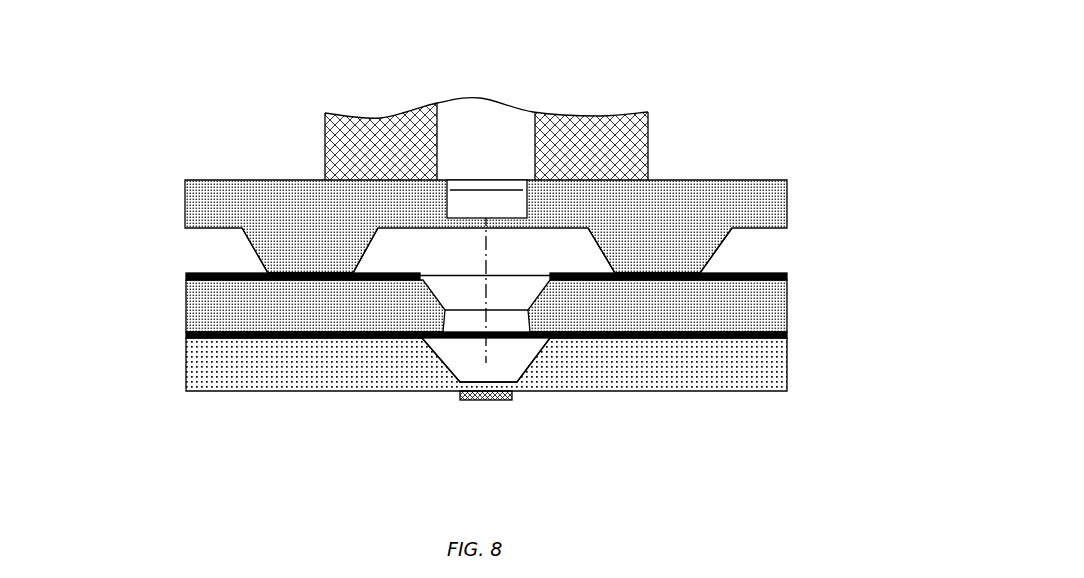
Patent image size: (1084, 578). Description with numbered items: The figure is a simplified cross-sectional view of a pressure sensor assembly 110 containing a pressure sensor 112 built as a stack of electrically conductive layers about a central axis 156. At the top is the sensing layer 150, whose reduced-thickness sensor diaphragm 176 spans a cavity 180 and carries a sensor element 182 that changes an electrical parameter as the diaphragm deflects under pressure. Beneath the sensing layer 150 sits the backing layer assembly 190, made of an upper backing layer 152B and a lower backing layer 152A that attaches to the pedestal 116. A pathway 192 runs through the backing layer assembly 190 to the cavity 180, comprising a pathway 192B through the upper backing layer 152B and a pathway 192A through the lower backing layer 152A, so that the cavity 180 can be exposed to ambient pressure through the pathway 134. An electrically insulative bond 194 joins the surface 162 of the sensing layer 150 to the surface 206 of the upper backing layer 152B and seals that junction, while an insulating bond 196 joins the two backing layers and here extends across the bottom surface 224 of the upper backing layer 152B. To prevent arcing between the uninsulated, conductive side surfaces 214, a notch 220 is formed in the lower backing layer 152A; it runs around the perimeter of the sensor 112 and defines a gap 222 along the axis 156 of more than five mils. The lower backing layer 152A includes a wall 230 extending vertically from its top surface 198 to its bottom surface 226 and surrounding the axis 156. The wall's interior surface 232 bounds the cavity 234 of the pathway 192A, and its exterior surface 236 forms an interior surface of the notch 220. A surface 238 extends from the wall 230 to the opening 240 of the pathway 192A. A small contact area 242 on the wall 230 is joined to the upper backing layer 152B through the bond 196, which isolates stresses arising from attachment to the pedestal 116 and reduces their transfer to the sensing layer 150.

The pressure sensor assembly 110 is at (150, 70).
The pressure sensor 112 is at (768, 92).
The pedestal 116 is at (343, 117).
The pathway 134 is at (450, 122).
The sensing layer 150 is at (773, 370).
The backing layer 152A is at (772, 210).
The backing layer 152B is at (783, 316).
The axis 156 is at (488, 293).
The surface 162 is at (768, 318).
The sensor diaphragm 176 is at (472, 401).
The cavity 180 is at (507, 360).
The sensor element 182 is at (486, 401).
The backing layer assembly 190 is at (850, 205).
The pathway 192 is at (463, 185).
The pathway 192A is at (525, 216).
The pathway 192B is at (457, 318).
The electrically insulative bond 194 is at (358, 336).
The insulating bond 196 is at (693, 280).
The top surface 198 is at (776, 172).
The surface 206 is at (198, 350).
The side surfaces 214 is at (787, 353).
The notch 220 is at (178, 262).
The gap 222 is at (145, 261).
The bottom surface 224 is at (228, 273).
The bottom surface 226 is at (275, 297).
The wall 230 is at (297, 247).
The interior surface 232 is at (372, 251).
The cavity 234 is at (572, 243).
The exterior surface 236 is at (716, 250).
The surface 238 is at (413, 230).
The opening 240 is at (511, 190).
The contact area 242 is at (297, 297).